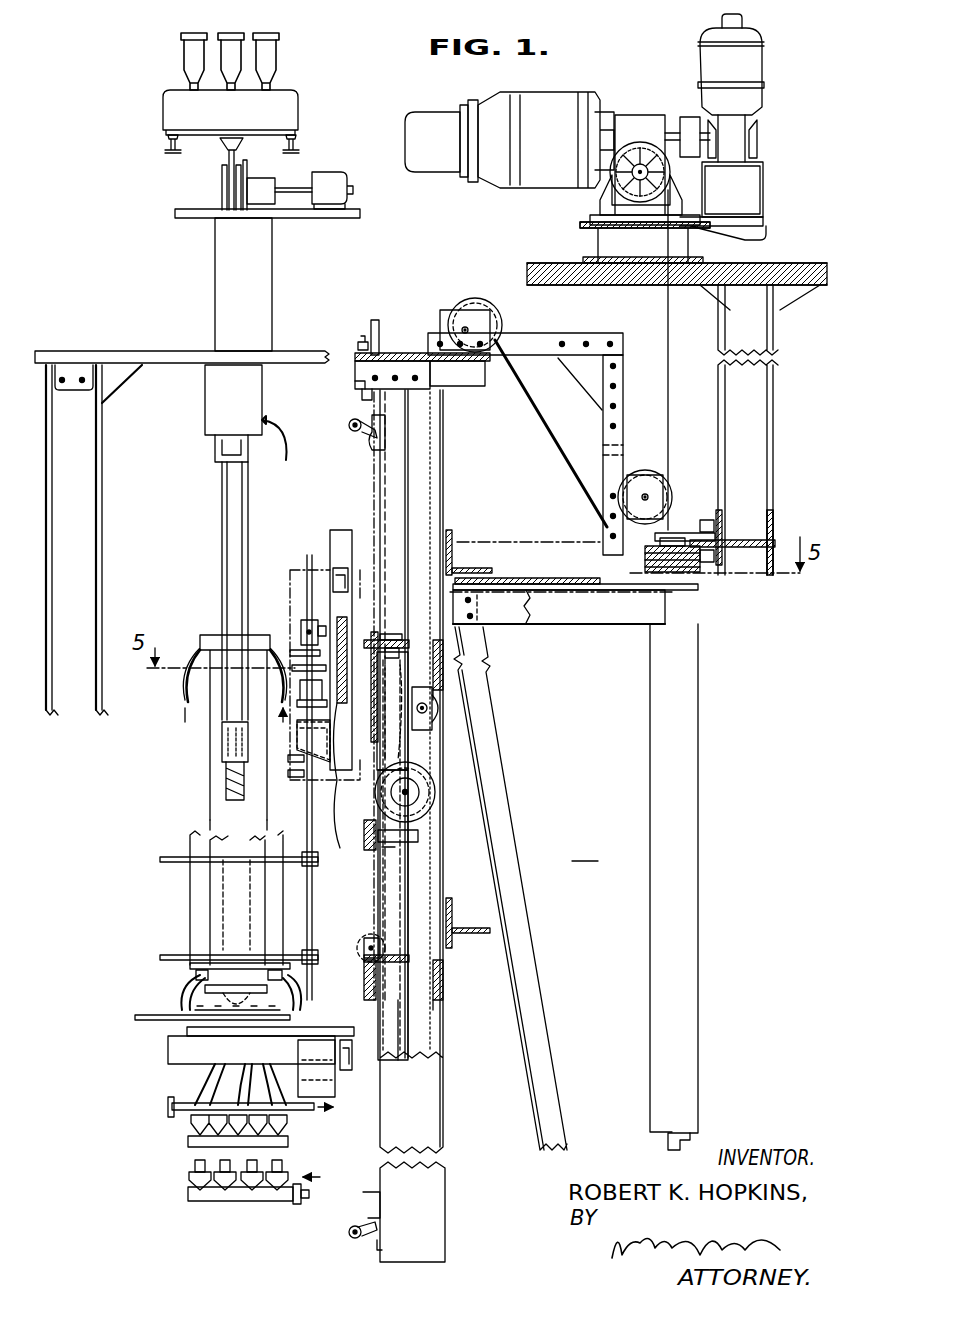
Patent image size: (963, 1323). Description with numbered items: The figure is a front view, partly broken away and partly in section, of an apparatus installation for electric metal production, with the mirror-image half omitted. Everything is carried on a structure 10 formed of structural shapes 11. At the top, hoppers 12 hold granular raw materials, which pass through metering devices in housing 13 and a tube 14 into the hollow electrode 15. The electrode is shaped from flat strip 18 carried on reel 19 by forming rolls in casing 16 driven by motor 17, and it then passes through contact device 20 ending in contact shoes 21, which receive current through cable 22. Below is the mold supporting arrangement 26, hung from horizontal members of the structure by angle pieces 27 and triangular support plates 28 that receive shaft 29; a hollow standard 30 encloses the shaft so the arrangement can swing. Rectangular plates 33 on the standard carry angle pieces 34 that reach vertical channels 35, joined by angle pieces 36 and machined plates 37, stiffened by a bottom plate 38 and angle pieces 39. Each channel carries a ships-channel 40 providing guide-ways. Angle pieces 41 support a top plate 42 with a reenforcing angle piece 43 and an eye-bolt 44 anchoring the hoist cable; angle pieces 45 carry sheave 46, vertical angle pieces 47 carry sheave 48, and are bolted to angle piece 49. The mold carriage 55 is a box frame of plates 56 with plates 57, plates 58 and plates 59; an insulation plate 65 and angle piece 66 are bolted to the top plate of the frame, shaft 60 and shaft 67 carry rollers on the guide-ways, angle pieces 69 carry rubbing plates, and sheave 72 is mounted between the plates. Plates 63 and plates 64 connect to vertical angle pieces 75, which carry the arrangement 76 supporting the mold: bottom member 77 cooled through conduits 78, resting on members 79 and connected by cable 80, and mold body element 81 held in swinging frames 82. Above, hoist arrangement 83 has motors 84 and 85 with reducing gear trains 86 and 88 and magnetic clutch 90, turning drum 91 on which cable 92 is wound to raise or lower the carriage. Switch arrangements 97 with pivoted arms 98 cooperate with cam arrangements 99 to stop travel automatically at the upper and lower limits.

The structure 10 is at (777, 420).
The structural shapes 11 is at (168, 150).
The hoppers 12 is at (262, 56).
The housing 13 is at (180, 111).
The tube 14 is at (228, 147).
The hollow electrode 15 is at (246, 800).
The casing 16 is at (270, 284).
The motor 17 is at (330, 178).
The flat strip 18 is at (222, 190).
The reel 19 is at (247, 172).
The contact device 20 is at (203, 402).
The contact shoes 21 is at (225, 752).
The cable 22 is at (278, 432).
The mold supporting arrangement 26 is at (586, 850).
The angle pieces 27 is at (715, 510).
The triangular support plate 28 is at (689, 539).
The shaft 29 is at (672, 532).
The hollow standard 30 is at (690, 898).
The rectangular plates 33 is at (676, 590).
The angle pieces 34 is at (604, 625).
The vertical channels 35 is at (440, 478).
The angle pieces 36 is at (466, 572).
The plates 37 is at (452, 545).
The plate 38 is at (377, 1249).
The angle pieces 39 is at (540, 1042).
The ships-channel 40 is at (395, 553).
The angle pieces 41 is at (476, 386).
The top plate 42 is at (410, 352).
The reenforcing angle piece 43 is at (371, 328).
The eye-bolt 44 is at (357, 379).
The angle pieces 45 is at (528, 335).
The sheave 46 is at (452, 292).
The angle pieces 47 is at (615, 422).
The sheave 48 is at (645, 470).
The angle piece 49 is at (572, 579).
The mold carriage 55 is at (410, 824).
The rectangular plates 56 is at (408, 902).
The plates 57 is at (366, 820).
The plates 58 is at (395, 642).
The plates 59 is at (433, 750).
The shaft 60 is at (430, 712).
The plates 63 is at (327, 758).
The plates 64 is at (340, 850).
The insulation plate 65 is at (392, 648).
The angle piece 66 is at (392, 634).
The shaft 67 is at (370, 946).
The angle pieces 69 is at (398, 712).
The sheave 72 is at (434, 804).
The vertical angle pieces 75 is at (345, 1090).
The arrangement 76 is at (188, 905).
The mold bottom member 77 is at (215, 1000).
The conduits 78 is at (148, 1112).
The members 79 is at (180, 1050).
The cable 80 is at (135, 1018).
The mold body element 81 is at (210, 805).
The frames 82 is at (182, 862).
The hoist arrangement 83 is at (534, 190).
The hoist motor 84 is at (550, 120).
The hoist motor 85 is at (752, 60).
The reducing gear train 86 is at (758, 135).
The reducing gear train 88 is at (640, 118).
The magnetic clutch 90 is at (688, 120).
The drum 91 is at (612, 183).
The cable 92 is at (665, 347).
The switch arrangement 97 is at (370, 445).
The pivoted arm 98 is at (348, 425).
The cam arrangements 99 is at (342, 578).